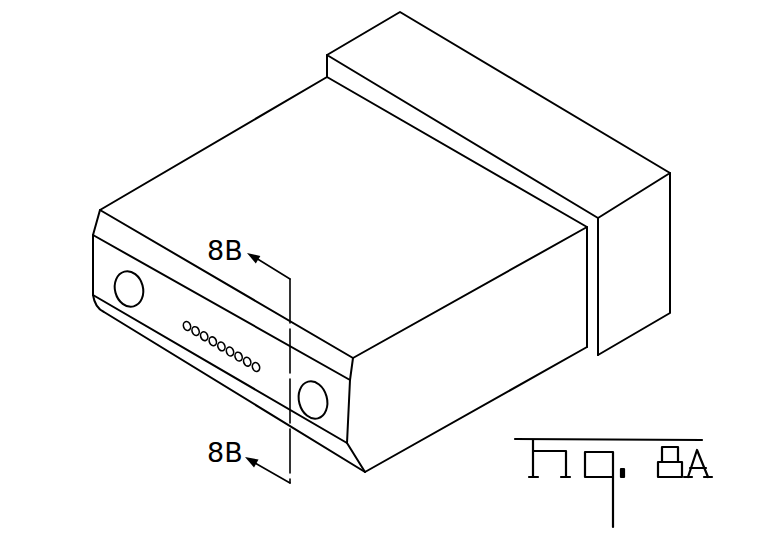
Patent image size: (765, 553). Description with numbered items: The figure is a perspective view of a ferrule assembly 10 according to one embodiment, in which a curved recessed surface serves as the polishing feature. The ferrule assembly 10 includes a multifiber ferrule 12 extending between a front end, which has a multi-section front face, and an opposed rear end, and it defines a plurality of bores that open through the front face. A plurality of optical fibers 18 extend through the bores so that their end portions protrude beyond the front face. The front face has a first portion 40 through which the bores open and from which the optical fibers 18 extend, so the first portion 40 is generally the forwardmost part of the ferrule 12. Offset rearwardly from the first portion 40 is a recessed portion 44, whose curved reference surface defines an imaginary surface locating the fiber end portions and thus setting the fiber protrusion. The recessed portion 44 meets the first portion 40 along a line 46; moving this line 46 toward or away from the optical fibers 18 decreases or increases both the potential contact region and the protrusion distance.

The ferrule assembly 10 is at (561, 74).
The multifiber ferrule 12 is at (488, 372).
The optical fibers 18 is at (200, 338).
The first portion 40 is at (150, 307).
The recessed portion 44 is at (348, 455).
The line 46 is at (222, 367).